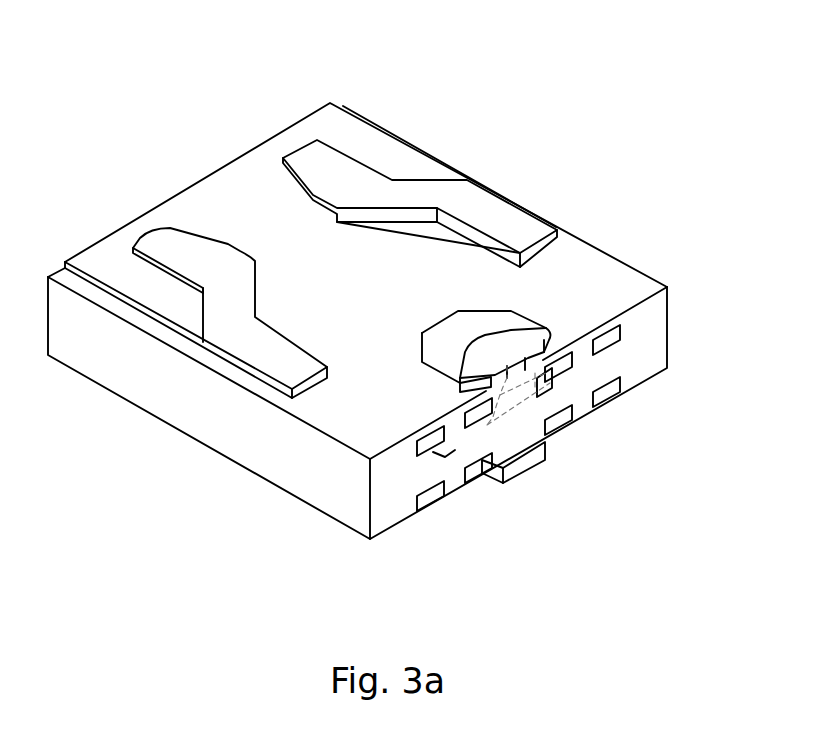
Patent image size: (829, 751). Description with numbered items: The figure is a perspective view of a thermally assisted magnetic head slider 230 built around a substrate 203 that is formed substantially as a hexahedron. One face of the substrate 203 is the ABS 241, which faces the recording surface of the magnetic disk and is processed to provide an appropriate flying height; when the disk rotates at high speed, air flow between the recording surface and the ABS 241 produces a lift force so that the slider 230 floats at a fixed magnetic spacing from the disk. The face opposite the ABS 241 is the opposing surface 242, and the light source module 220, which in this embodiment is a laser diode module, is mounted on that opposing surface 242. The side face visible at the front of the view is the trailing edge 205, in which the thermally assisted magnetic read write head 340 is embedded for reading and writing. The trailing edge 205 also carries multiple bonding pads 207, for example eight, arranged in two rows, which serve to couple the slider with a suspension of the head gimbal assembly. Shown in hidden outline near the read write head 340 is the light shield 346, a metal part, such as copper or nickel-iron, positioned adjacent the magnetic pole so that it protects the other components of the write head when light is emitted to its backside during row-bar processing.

The thermally assisted magnetic head slider 230 is at (77, 73).
The ABS 241 is at (392, 193).
The substrate 203 is at (453, 273).
The light shield 346 is at (533, 393).
The trailing edge 205 is at (638, 350).
The bonding pads 207 is at (600, 390).
The thermally assisted magnetic read write head 340 is at (512, 393).
The light source module 220 is at (510, 475).
The opposing surface 242 is at (441, 497).